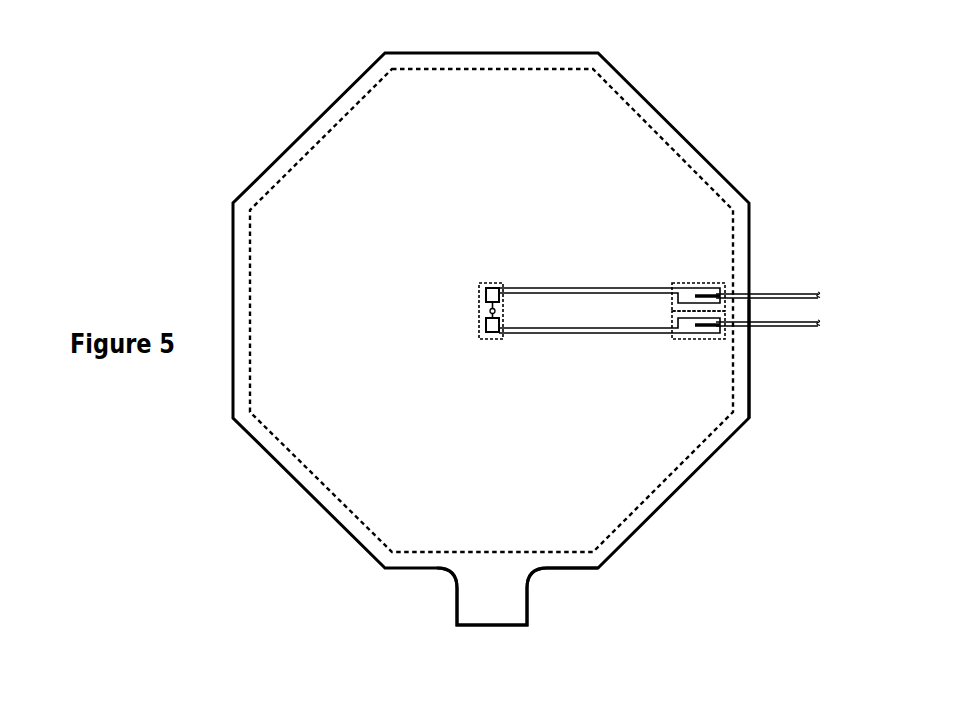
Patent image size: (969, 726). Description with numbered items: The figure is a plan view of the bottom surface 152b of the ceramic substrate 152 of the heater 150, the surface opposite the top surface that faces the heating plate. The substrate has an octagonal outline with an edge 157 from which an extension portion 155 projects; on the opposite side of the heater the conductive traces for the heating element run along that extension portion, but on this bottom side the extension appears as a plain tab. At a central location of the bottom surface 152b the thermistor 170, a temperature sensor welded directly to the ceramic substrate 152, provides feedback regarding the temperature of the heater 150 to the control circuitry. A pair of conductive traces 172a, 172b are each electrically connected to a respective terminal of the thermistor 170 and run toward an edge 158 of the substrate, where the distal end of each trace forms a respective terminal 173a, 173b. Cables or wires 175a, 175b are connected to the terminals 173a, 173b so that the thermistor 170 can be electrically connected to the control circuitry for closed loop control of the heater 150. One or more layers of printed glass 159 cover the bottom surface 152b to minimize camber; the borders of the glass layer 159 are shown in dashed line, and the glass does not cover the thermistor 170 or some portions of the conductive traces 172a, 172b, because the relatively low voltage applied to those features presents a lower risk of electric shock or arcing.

The heater 150 is at (727, 53).
The ceramic substrate 152 is at (702, 152).
The bottom surface 152b is at (657, 117).
The glass layer 159 is at (720, 198).
The edge 158 is at (749, 357).
The edge 157 is at (565, 571).
The extension portion 155 is at (527, 603).
The thermistor 170 is at (490, 311).
The conductive trace 172a is at (650, 290).
The conductive trace 172b is at (645, 333).
The terminal 173a is at (698, 283).
The terminal 173b is at (698, 339).
The wire 175a is at (778, 290).
The wire 175b is at (778, 330).